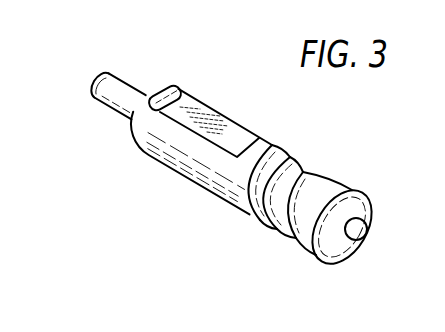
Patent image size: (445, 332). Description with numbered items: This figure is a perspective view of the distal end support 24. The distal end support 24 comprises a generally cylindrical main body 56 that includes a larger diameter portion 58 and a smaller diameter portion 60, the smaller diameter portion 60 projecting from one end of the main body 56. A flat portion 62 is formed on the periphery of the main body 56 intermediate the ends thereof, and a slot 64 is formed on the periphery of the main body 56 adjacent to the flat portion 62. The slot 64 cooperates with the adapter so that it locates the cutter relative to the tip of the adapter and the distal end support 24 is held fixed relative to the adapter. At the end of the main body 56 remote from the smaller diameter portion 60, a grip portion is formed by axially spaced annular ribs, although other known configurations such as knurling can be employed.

The distal end support 24 is at (338, 155).
The main body 56 is at (153, 158).
The larger diameter portion 58 is at (215, 168).
The smaller diameter portion 60 is at (138, 89).
The flat portion 62 is at (241, 134).
The slot 64 is at (176, 85).